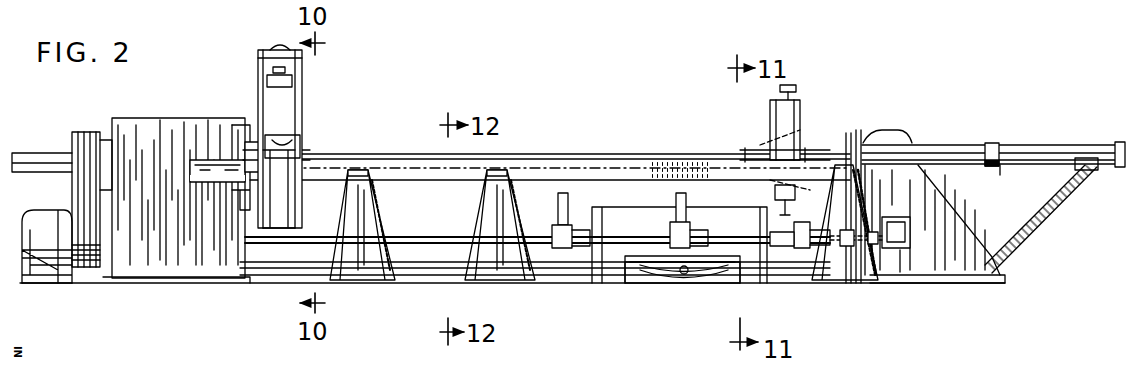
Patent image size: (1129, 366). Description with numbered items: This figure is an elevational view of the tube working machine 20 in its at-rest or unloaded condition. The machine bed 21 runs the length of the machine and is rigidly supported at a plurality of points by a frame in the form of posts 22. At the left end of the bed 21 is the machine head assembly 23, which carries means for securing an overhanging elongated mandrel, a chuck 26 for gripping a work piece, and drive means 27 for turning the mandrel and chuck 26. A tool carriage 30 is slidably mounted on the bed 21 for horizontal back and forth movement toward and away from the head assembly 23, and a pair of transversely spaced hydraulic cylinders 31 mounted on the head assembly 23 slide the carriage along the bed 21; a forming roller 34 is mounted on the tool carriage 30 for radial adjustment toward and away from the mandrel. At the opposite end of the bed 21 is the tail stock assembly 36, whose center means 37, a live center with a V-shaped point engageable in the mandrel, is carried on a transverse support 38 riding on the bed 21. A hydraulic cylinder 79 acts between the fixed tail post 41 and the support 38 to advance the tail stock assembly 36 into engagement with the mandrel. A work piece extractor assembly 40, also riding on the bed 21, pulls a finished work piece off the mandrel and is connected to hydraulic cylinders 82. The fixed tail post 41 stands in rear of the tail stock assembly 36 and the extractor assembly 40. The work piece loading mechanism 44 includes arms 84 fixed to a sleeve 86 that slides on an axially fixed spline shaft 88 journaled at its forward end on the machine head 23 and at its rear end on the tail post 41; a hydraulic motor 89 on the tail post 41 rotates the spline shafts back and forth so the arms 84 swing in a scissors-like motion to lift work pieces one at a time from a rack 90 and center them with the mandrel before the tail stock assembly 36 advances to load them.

The tube working machine 20 is at (633, 91).
The machine bed 21 is at (691, 152).
The posts 22 is at (352, 280).
The machine head assembly 23 is at (200, 85).
The chuck 26 is at (253, 138).
The drive means 27 is at (157, 115).
The tool carriage 30 is at (303, 105).
The hydraulic cylinders 31 is at (40, 157).
The forming roller 34 is at (300, 148).
The tail stock assembly 36 is at (840, 122).
The center means 37 is at (748, 150).
The transverse support 38 is at (856, 140).
The work piece extractor assembly 40 is at (801, 103).
The fixed tail post 41 is at (935, 270).
The work piece loading mechanism 44 is at (622, 283).
The hydraulic cylinder 79 is at (1060, 145).
The hydraulic cylinders 82 is at (990, 145).
The arms 84 is at (557, 215).
The sleeve 86 is at (790, 240).
The spline shaft 88 is at (447, 236).
The hydraulic motor 89 is at (900, 235).
The rack 90 is at (600, 215).